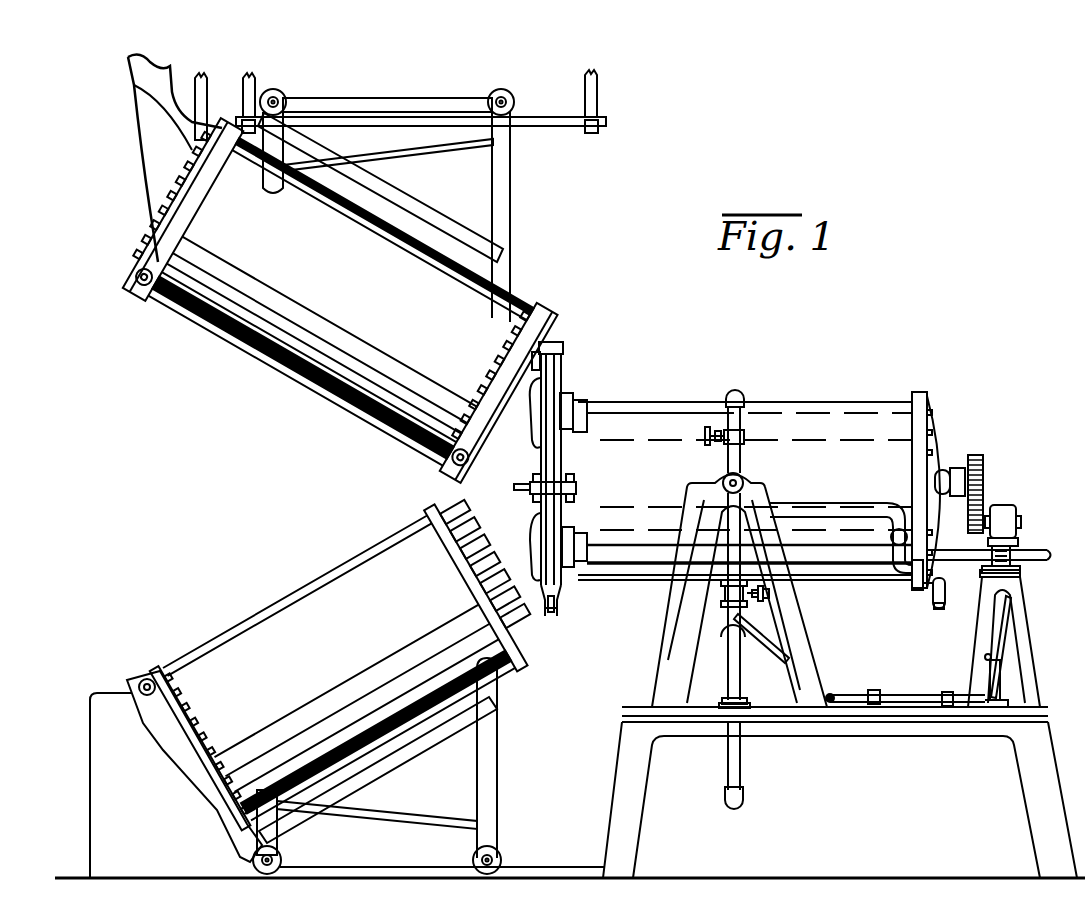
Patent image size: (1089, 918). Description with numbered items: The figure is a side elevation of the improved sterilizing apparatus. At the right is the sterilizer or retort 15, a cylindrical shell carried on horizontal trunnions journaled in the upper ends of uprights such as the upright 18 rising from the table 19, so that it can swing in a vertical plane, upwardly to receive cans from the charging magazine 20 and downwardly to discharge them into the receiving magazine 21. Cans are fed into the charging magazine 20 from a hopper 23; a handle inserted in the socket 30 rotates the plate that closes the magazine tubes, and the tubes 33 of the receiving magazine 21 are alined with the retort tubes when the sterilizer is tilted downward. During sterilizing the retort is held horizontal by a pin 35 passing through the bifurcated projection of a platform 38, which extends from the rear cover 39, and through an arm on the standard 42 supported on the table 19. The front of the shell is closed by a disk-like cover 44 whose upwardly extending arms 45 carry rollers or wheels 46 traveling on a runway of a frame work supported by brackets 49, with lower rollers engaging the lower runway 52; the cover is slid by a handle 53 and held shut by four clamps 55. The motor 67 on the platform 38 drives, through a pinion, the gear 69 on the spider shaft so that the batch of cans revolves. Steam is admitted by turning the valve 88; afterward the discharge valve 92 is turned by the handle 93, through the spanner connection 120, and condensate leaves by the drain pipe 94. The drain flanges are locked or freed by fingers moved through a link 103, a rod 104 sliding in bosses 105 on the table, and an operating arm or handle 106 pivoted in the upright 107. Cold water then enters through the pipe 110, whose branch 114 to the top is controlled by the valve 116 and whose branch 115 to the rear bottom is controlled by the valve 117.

The sterilizer or retort 15 is at (812, 418).
The upright 18 is at (776, 486).
The table 19 is at (912, 736).
The charging magazine 20 is at (297, 337).
The receiving magazine 21 is at (323, 600).
The hopper 23 is at (156, 178).
The socket 30 is at (452, 461).
The tubes of the receiving magazine 33 is at (440, 528).
The pin 35 is at (1038, 549).
The platform 38 is at (945, 586).
The rear cover 39 is at (942, 443).
The standard 42 is at (978, 647).
The cover 44 is at (552, 392).
The upwardly extending arms 45 is at (548, 368).
The rollers or wheels 46 is at (560, 352).
The brackets 49 is at (578, 403).
The lower horizontal bar or runway 52 is at (558, 607).
The handle 53 is at (522, 487).
The clamps 55 is at (577, 488).
The motor 67 is at (1002, 512).
The gear 69 is at (978, 455).
The valve 88 is at (987, 514).
The drain or discharge valve 92 is at (728, 596).
The handle 93 is at (938, 608).
The drain pipe 94 is at (728, 685).
The link 103 is at (776, 660).
The rod 104 is at (926, 695).
The bosses 105 is at (874, 690).
The operating arm or handle 106 is at (1006, 625).
The upright 107 is at (1000, 682).
The pipe 110 is at (724, 479).
The branch 114 is at (748, 384).
The branch 115 is at (846, 510).
The valve 116 is at (744, 437).
The valve 117 is at (896, 505).
The spanner connection 120 is at (772, 605).